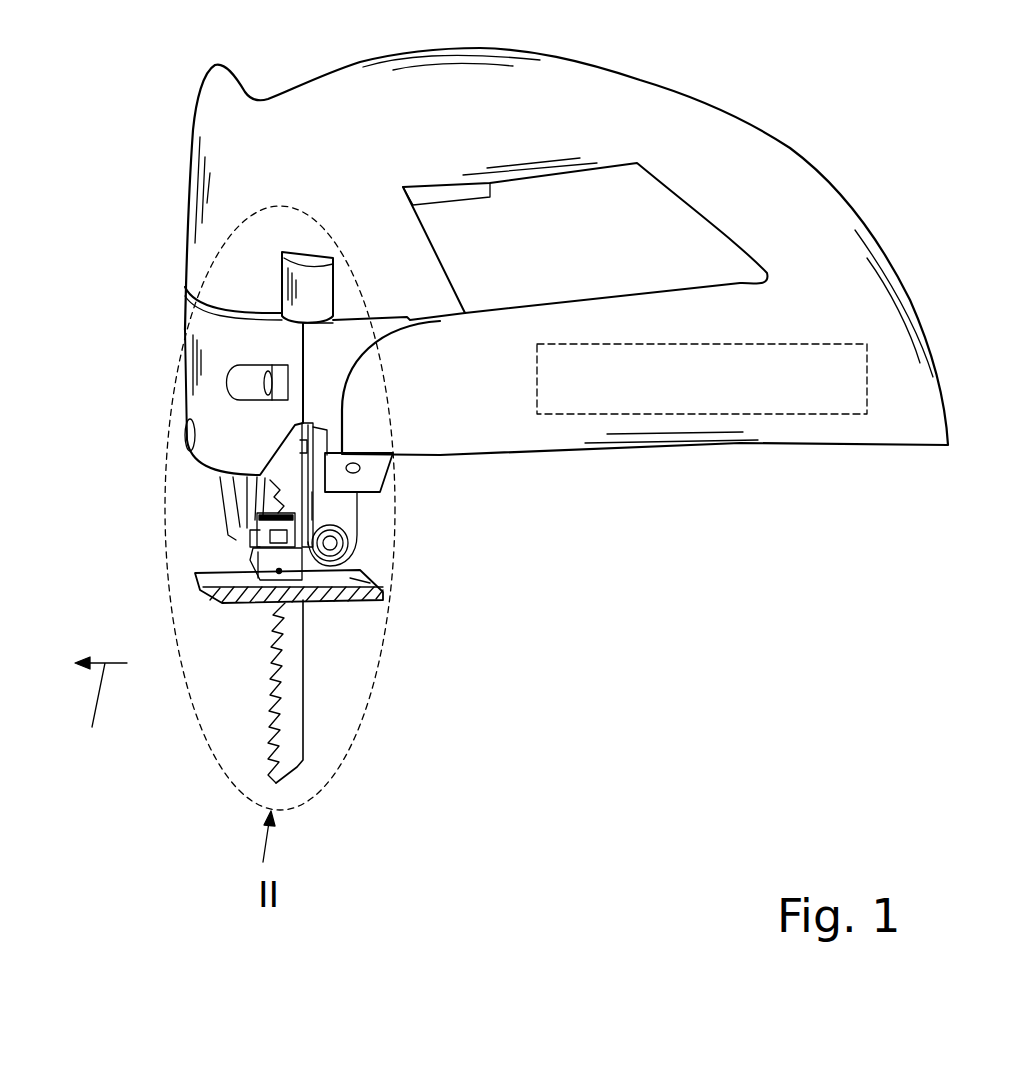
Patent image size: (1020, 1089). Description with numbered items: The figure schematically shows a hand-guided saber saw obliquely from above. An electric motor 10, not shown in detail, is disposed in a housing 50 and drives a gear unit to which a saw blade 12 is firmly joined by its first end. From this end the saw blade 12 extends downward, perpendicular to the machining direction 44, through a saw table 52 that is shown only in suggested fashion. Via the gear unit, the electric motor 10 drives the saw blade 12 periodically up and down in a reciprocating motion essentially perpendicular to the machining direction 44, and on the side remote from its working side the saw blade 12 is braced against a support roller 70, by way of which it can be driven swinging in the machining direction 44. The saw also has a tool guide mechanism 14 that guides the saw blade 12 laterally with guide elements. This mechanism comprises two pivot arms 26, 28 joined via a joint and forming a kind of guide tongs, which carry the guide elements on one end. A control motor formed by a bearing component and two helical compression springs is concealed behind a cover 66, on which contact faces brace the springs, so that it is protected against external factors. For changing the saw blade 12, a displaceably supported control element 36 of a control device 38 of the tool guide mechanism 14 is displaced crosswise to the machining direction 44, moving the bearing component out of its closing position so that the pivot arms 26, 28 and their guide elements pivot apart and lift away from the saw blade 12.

The electric motor 10 is at (686, 416).
The saw blade 12 is at (280, 713).
The tool guide mechanism 14 is at (210, 493).
The pivot arm 26 is at (227, 513).
The pivot arm 28 is at (237, 533).
The control element 36 is at (315, 295).
The control device 38 is at (328, 330).
The machining direction 44 is at (98, 711).
The housing 50 is at (804, 238).
The saw table 52 is at (376, 596).
The cover 66 is at (217, 412).
The support roller 70 is at (343, 547).